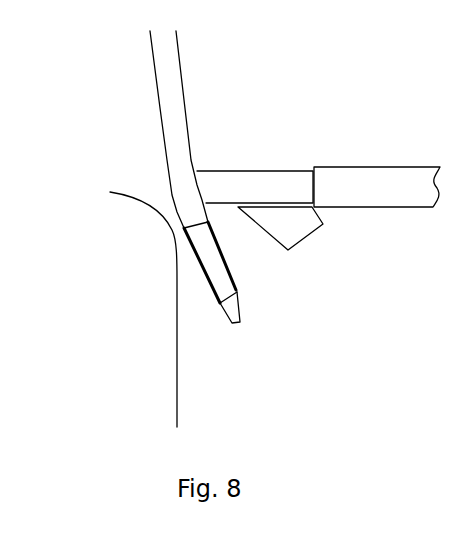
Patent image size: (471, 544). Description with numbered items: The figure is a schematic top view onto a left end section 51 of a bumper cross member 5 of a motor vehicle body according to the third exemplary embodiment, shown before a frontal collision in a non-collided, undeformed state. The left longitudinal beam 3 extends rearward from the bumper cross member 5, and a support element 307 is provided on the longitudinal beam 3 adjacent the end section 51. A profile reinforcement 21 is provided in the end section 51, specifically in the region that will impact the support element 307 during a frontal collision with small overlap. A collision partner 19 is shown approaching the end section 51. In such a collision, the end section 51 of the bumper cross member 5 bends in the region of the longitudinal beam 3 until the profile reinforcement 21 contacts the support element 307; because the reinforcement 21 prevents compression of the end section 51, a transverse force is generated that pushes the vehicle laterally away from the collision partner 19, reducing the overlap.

The left longitudinal beam 3 is at (293, 171).
The bumper cross member 5 is at (163, 83).
The collision partner 19 is at (130, 223).
The profile reinforcement 21 is at (212, 263).
The left end section 51 is at (222, 249).
The support element 307 is at (298, 224).